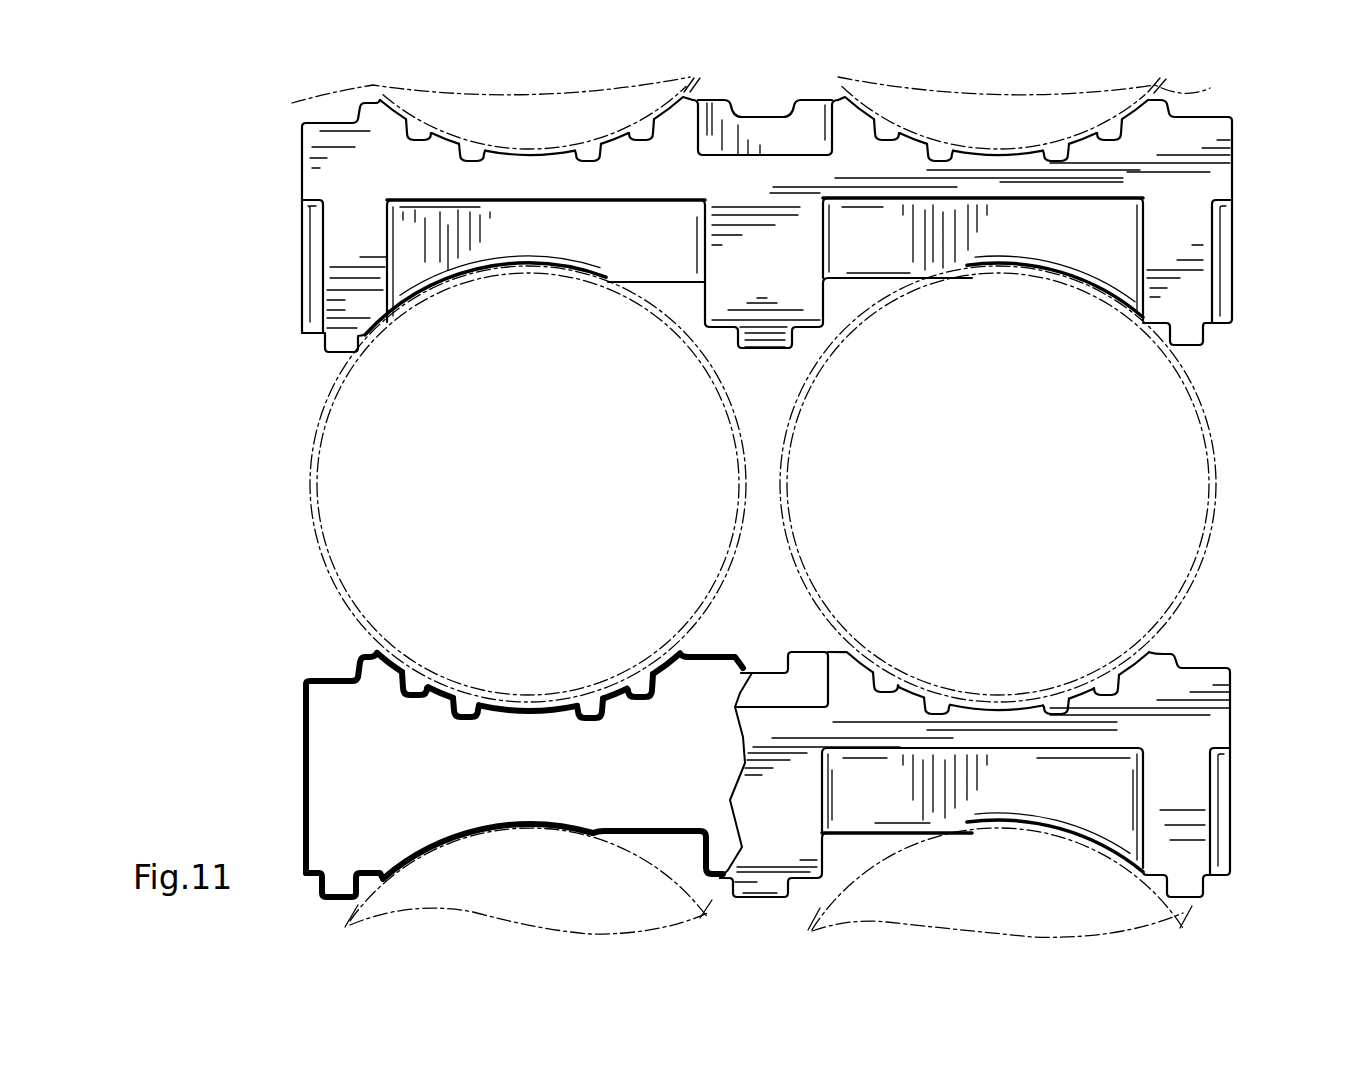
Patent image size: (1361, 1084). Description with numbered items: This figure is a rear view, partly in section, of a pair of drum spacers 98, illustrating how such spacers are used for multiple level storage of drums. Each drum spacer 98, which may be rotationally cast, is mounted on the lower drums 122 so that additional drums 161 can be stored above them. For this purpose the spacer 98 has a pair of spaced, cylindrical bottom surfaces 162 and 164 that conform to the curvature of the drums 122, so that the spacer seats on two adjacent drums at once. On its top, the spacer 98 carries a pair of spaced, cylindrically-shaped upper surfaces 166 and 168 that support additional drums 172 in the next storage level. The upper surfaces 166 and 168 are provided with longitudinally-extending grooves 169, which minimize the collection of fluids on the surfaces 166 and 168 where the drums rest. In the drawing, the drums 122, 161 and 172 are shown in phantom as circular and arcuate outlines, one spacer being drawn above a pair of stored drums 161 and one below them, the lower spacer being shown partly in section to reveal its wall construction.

The drum spacer 98 is at (1248, 160).
The drums 122 is at (348, 928).
The additional drums 161 is at (327, 577).
The cylindrical bottom surface 162 is at (973, 268).
The cylindrical bottom surface 164 is at (474, 282).
The cylindrically-shaped upper surface 166 is at (987, 150).
The cylindrically-shaped upper surface 168 is at (518, 150).
The longitudinally-extending grooves 169 is at (468, 149).
The additional drums 172 is at (752, 111).